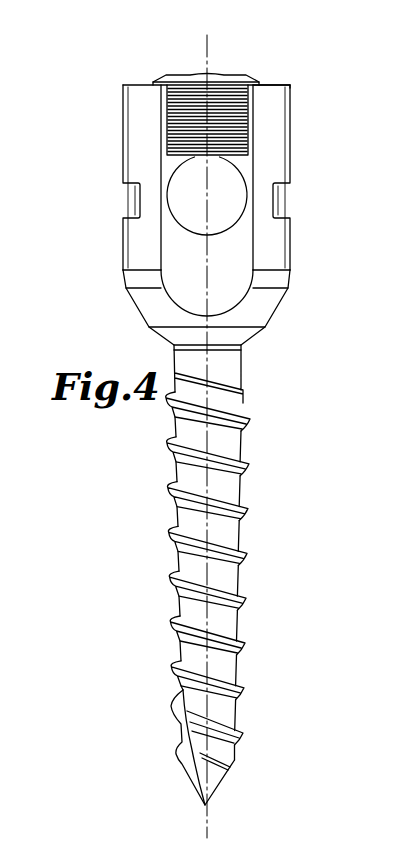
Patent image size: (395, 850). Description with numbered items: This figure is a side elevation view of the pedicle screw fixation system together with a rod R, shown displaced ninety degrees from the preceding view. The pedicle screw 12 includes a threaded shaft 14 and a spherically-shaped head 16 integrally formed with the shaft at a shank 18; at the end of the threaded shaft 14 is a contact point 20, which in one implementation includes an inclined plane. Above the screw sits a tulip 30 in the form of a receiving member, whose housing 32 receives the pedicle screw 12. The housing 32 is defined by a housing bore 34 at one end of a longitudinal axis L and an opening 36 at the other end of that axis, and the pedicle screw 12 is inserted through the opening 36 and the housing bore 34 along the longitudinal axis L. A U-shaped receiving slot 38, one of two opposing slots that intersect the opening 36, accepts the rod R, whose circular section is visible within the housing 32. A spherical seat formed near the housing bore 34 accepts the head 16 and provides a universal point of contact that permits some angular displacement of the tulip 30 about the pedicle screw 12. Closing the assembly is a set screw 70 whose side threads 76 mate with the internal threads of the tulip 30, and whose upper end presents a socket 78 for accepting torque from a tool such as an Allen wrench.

The longitudinal axis L is at (207, 37).
The pedicle screw 12 is at (253, 466).
The threaded shaft 14 is at (251, 580).
The head 16 is at (251, 330).
The shank 18 is at (243, 376).
The contact point 20 is at (208, 806).
The tulip 30 is at (291, 239).
The housing 32 is at (123, 136).
The housing bore 34 is at (150, 328).
The opening 36 is at (272, 85).
The U-shaped receiving slot 38 is at (182, 172).
The rod R is at (200, 196).
The set screw 70 is at (238, 74).
The threads 76 is at (238, 133).
The socket 78 is at (184, 73).